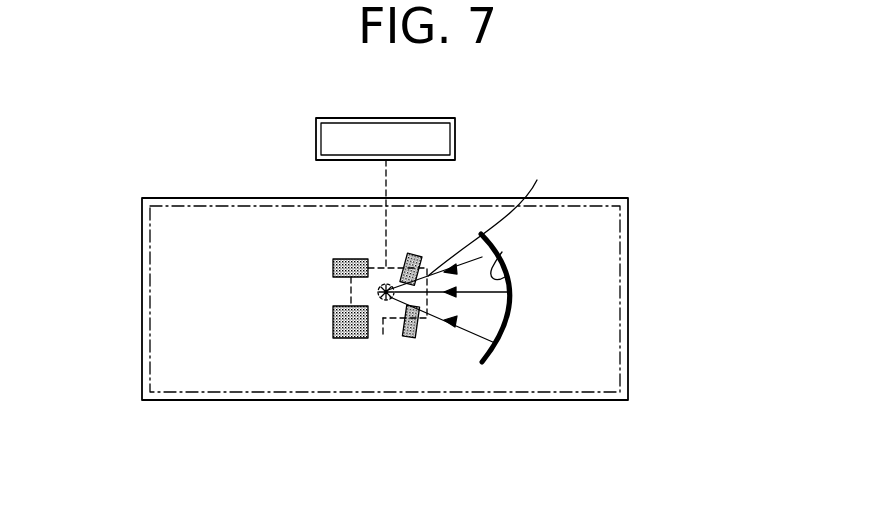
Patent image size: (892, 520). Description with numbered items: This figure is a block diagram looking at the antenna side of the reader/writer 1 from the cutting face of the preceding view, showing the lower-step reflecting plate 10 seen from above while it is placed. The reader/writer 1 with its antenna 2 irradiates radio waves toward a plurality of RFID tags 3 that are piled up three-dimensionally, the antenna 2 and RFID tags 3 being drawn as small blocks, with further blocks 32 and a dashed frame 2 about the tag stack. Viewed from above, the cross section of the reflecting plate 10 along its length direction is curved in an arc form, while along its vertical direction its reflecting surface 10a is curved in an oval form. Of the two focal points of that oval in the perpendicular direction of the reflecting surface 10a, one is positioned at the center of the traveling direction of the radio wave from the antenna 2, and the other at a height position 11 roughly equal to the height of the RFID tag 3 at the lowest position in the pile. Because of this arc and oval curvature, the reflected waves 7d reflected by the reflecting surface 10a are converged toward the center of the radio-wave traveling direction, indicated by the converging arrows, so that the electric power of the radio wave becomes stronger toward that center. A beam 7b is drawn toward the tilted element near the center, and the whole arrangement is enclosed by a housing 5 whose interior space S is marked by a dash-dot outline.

The reader/writer 1 is at (457, 130).
The antenna 2 is at (383, 336).
The RFID tag 3 is at (347, 338).
The optical element 32 is at (422, 413).
The housing 5 is at (630, 278).
The light beam 7b is at (487, 216).
The reflected waves 7d is at (470, 262).
The reflecting plate 10 is at (507, 322).
The reflecting surface 10a is at (505, 277).
The height position 11 is at (378, 292).
The interior space S is at (622, 377).